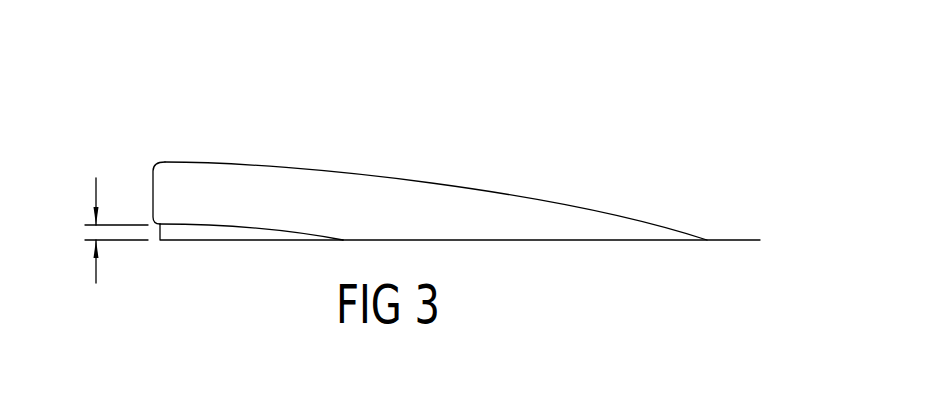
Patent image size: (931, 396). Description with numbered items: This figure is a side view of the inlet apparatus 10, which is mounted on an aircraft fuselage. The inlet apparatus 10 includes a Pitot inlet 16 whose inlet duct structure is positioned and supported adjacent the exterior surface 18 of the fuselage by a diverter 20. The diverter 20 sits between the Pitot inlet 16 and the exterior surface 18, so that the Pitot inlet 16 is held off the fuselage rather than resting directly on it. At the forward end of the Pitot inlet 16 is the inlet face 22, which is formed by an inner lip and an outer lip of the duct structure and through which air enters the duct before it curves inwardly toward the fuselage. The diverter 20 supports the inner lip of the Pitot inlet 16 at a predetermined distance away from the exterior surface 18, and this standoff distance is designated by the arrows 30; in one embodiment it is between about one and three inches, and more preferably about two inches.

The inlet apparatus 10 is at (552, 120).
The Pitot inlet 16 is at (438, 168).
The exterior surface 18 is at (723, 240).
The diverter 20 is at (187, 233).
The inlet face 22 is at (153, 190).
The arrows 30 is at (96, 283).